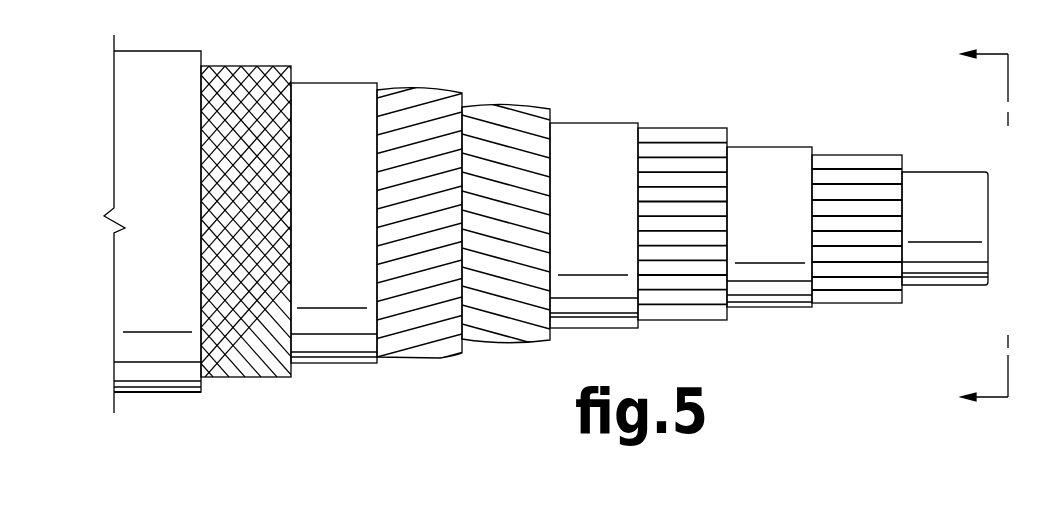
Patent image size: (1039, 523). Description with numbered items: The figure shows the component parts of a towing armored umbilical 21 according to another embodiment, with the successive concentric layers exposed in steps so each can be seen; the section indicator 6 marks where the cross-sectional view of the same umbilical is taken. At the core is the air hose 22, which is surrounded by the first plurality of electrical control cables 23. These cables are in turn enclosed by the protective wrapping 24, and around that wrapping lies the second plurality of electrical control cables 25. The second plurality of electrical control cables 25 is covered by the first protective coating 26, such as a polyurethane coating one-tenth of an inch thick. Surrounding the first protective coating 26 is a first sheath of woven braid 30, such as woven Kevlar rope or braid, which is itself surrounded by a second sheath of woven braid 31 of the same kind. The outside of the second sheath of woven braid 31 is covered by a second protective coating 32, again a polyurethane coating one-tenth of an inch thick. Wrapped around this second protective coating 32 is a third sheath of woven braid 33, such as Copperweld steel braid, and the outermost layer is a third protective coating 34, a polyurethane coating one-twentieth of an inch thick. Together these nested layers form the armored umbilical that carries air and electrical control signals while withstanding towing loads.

The towing armored umbilical 21 is at (494, 234).
The air hose 22 is at (940, 265).
The first plurality of electrical control cables 23 is at (853, 285).
The protective wrapping 24 is at (762, 294).
The second plurality of electrical control cables 25 is at (673, 315).
The first protective coating 26 is at (588, 306).
The first sheath of woven braid 30 is at (498, 317).
The second sheath of woven braid 31 is at (408, 334).
The second protective coating 32 is at (326, 340).
The third sheath of woven braid 33 is at (243, 352).
The third protective coating 34 is at (148, 371).
The section line 6- 6 is at (975, 226).